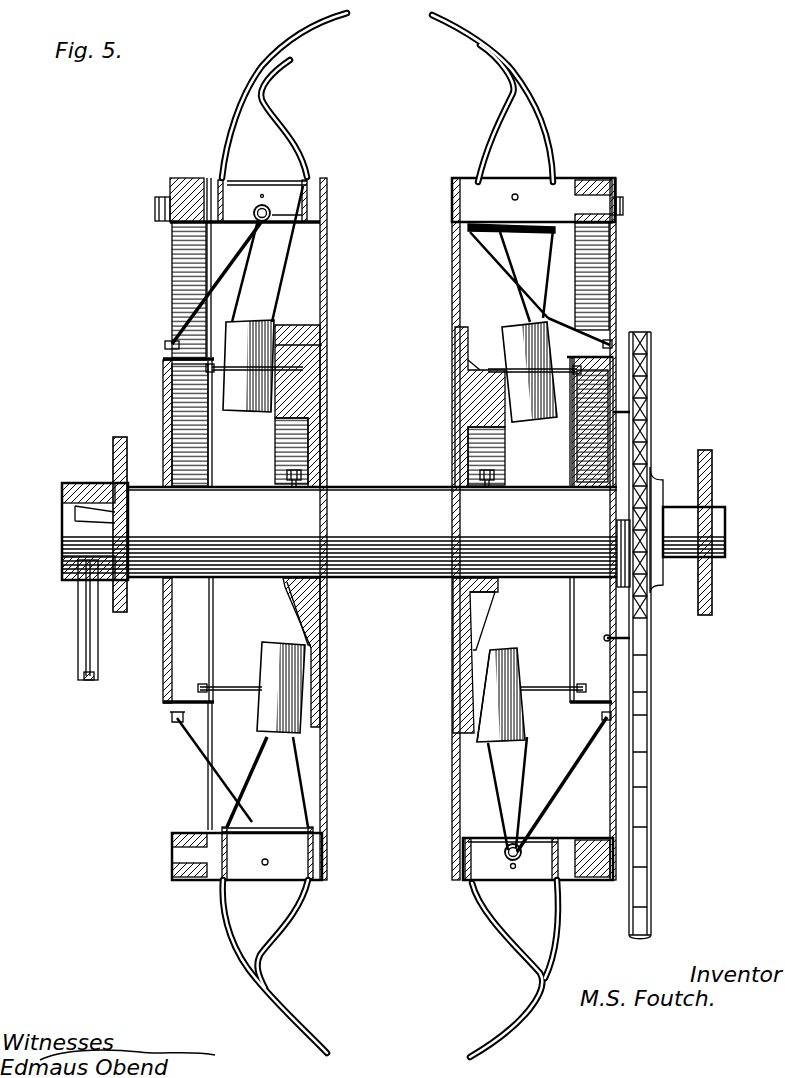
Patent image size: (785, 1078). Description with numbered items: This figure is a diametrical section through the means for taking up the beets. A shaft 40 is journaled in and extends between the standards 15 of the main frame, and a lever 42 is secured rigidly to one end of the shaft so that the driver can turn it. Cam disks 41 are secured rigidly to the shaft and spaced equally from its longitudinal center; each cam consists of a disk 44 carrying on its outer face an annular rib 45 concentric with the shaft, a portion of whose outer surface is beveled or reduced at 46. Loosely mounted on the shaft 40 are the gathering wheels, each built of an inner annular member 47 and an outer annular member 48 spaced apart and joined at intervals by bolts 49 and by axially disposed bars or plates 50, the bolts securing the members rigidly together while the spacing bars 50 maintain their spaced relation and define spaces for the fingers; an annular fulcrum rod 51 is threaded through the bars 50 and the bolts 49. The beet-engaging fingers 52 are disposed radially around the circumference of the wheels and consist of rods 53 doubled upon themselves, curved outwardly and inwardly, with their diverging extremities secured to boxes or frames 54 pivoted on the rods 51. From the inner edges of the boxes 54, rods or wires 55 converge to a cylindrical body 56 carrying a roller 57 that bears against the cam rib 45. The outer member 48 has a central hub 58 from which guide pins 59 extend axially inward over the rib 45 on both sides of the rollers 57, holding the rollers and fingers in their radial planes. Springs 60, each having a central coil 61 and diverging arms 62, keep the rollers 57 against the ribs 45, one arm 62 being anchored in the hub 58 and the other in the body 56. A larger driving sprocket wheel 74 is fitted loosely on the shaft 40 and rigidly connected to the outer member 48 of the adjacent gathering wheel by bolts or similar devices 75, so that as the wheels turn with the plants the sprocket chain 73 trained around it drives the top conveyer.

The standards 15 is at (133, 464).
The shaft 40 is at (76, 522).
The cam disks 41 is at (302, 400).
The lever 42 is at (78, 625).
The disks 44 is at (317, 622).
The annular ribs 45 is at (293, 353).
The beveled or reduced portion 46 is at (301, 602).
The inner annular member 47 is at (327, 264).
The outer annular member 48 is at (172, 274).
The bolts 49 is at (625, 214).
The axially disposed bars or plates 50 is at (393, 529).
The annular fulcrum rod 51 is at (268, 862).
The beet-engaging fingers 52 is at (387, 97).
The rods 53 is at (298, 1032).
The boxes or frames 54 is at (308, 208).
The rods or wires 55 is at (278, 291).
The cylindrical body 56 is at (490, 718).
The roller 57 is at (248, 414).
The hub 58 is at (200, 472).
The guide pins 59 is at (294, 364).
The springs 60 is at (242, 246).
The central coil 61 is at (266, 210).
The arms 62 is at (200, 745).
The sprocket chain 73 is at (652, 860).
The driving sprocket wheel 74 is at (652, 686).
The bolts or similar devices 75 is at (605, 638).